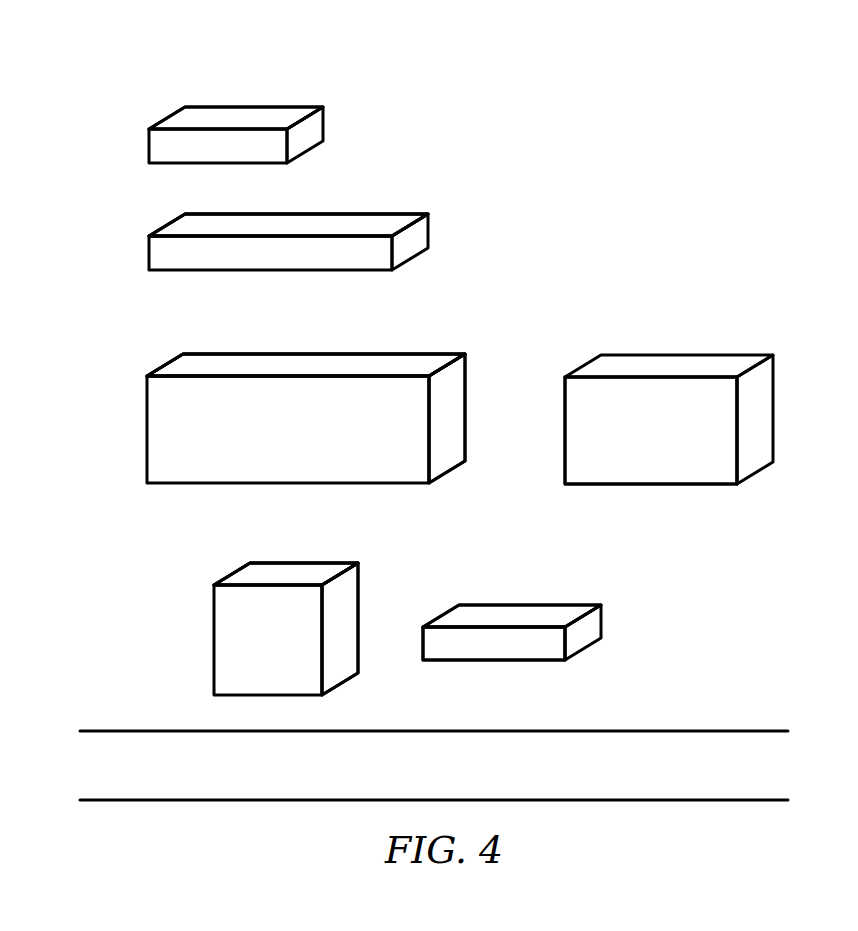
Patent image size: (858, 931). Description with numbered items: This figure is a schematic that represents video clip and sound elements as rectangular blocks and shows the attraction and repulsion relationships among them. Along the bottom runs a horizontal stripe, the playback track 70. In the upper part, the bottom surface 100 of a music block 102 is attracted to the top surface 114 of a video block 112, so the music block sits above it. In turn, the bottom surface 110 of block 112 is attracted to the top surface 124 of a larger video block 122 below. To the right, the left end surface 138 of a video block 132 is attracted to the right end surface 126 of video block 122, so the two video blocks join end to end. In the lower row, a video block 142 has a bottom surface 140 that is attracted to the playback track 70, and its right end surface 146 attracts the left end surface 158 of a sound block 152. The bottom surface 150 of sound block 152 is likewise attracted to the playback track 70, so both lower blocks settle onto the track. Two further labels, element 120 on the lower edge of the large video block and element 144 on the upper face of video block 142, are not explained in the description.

The playback track 70 is at (459, 765).
The bottom surface 100 is at (217, 155).
The music block 102 is at (236, 88).
The bottom surface 110 is at (275, 262).
The video block 112 is at (288, 197).
The top surface 114 is at (320, 200).
The third data object block 120 is at (306, 439).
The video block 122 is at (306, 341).
The top surface 124 is at (319, 342).
The right end surface 126 is at (477, 418).
The video block 132 is at (669, 392).
The left end surface 138 is at (618, 438).
The bottom surface 140 is at (273, 645).
The video block 142 is at (286, 550).
The top face of fifth block 144 is at (277, 561).
The right end surface 146 is at (373, 629).
The bottom surface 150 is at (512, 656).
The sound block 152 is at (512, 588).
The left end surface 158 is at (465, 658).